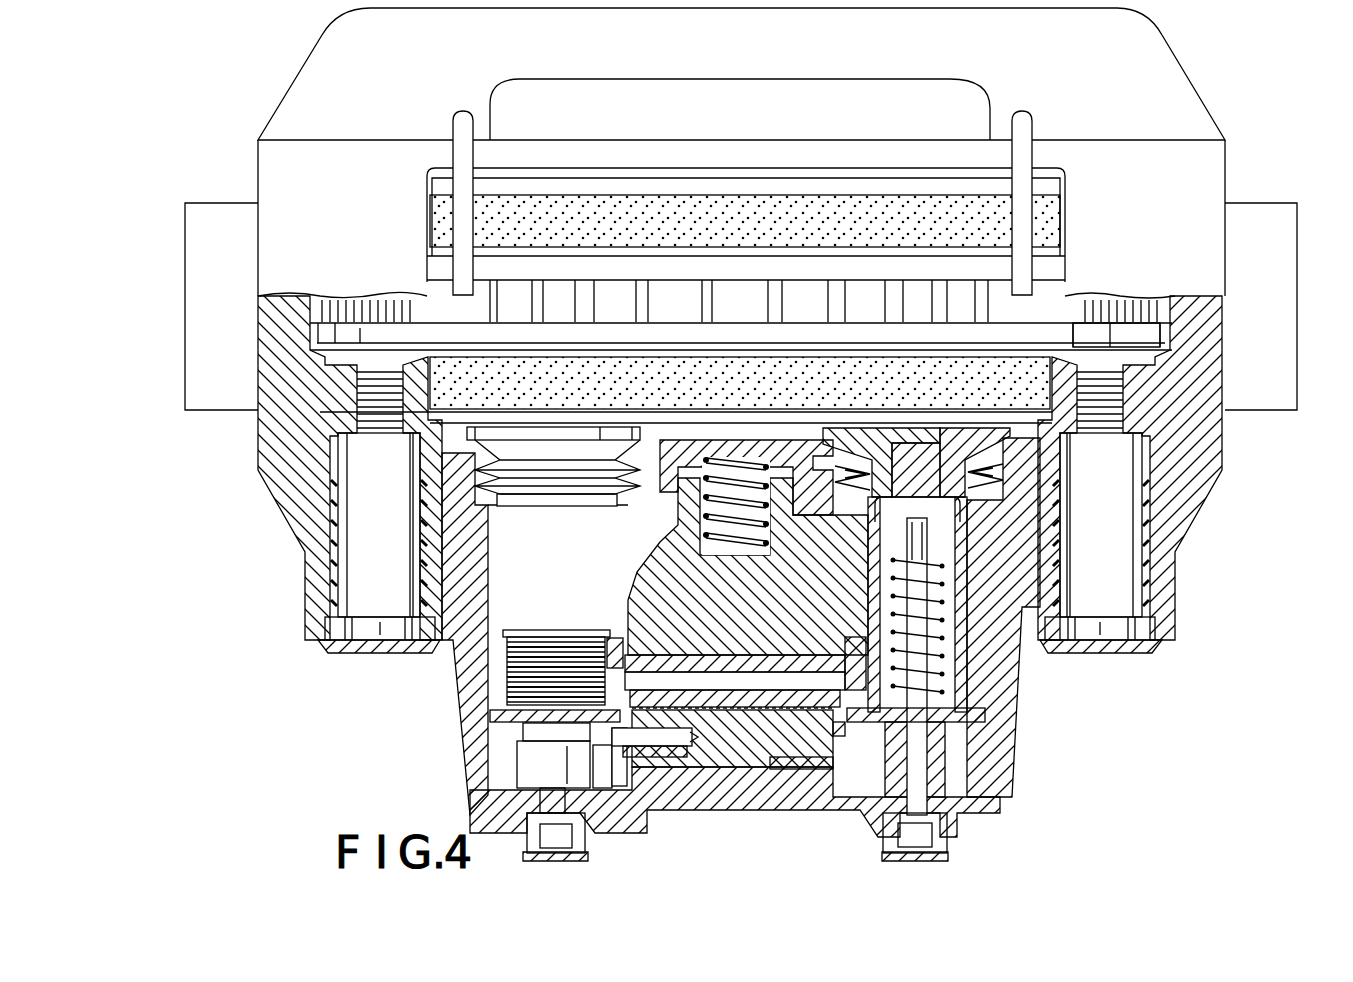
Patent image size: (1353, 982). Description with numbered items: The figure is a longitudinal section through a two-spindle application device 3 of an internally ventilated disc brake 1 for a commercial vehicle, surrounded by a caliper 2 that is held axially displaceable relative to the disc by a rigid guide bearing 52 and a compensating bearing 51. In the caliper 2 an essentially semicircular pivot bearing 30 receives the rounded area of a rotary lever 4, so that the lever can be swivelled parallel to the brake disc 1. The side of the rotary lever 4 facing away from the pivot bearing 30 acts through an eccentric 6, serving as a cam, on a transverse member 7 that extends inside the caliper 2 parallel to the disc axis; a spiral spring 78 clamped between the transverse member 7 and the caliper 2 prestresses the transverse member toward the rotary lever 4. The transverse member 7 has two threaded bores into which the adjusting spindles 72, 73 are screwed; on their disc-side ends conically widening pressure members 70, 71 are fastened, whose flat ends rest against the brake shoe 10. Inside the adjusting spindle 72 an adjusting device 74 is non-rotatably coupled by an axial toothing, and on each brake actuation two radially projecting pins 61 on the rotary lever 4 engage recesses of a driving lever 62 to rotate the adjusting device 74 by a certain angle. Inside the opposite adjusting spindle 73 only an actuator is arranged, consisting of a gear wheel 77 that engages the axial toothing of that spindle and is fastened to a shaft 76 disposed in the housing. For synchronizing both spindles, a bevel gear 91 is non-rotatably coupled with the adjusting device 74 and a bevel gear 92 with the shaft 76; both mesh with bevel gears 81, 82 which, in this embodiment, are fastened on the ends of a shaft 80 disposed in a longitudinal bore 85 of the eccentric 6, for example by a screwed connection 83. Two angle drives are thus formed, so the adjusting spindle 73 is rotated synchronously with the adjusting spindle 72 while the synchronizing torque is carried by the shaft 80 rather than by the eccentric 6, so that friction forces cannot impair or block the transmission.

The brake disc 1 is at (1147, 335).
The caliper 2 is at (1175, 80).
The application device 3 is at (708, 806).
The rotary lever 4 is at (747, 747).
The eccentric 6 is at (812, 702).
The transverse member 7 is at (680, 578).
The brake shoe 10 is at (475, 372).
The pivot bearing 30 is at (782, 770).
The compensating bearing 51 is at (1158, 587).
The rigid guide bearing 52 is at (322, 572).
The pins 61 is at (653, 735).
The driving lever 62 is at (590, 812).
The pressure member 70 is at (556, 447).
The pressure member 71 is at (918, 440).
The adjusting spindle 72 is at (545, 666).
The adjusting spindle 73 is at (960, 680).
The adjusting device 74 is at (530, 760).
The shaft 76 is at (930, 757).
The gear wheel 77 is at (855, 582).
The spiral spring 78 is at (705, 522).
The shaft 80 is at (708, 680).
The bevel gear 81 is at (628, 655).
The bevel gear 82 is at (846, 652).
The screwed connection 83 is at (615, 650).
The longitudinal bore 85 is at (773, 680).
The bevel gear 91 is at (500, 714).
The bevel gear 92 is at (985, 718).